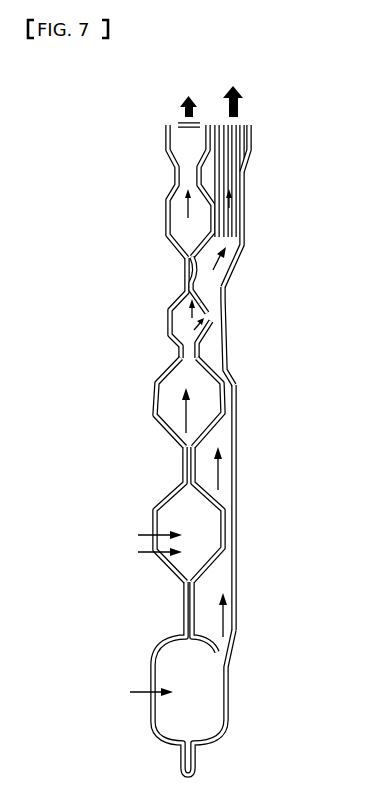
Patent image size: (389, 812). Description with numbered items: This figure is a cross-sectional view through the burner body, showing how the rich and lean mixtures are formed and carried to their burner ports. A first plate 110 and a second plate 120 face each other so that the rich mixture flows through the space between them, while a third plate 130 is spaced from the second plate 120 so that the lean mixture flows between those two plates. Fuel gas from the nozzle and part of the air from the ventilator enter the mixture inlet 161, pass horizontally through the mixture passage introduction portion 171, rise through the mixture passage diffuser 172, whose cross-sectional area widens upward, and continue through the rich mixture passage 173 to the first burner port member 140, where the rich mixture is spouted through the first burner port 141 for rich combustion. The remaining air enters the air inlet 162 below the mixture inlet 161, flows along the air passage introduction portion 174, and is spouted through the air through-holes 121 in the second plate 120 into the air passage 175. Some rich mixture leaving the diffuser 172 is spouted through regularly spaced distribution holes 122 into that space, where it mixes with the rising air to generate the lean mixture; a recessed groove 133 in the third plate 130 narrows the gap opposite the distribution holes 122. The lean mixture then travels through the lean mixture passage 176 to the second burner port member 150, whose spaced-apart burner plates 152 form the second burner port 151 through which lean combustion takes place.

The first plate 110 is at (190, 270).
The second plate 120 is at (238, 293).
The air through-hole 121 is at (220, 659).
The distribution hole 122 is at (210, 316).
The third plate 130 is at (233, 437).
The recessed groove 133 is at (229, 355).
The first burner port member 140 is at (165, 137).
The first burner port 141 is at (177, 124).
The second burner port member 150 is at (282, 172).
The second burner port 151 is at (241, 124).
The burner plate 152 is at (227, 138).
The mixture inlet 161 is at (207, 533).
The air inlet 162 is at (212, 708).
The mixture passage introduction portion 171 is at (217, 514).
The mixture passage diffuser 172 is at (208, 402).
The rich mixture passage 173 is at (151, 191).
The air passage introduction portion 174 is at (213, 678).
The air passage 175 is at (223, 472).
The lean mixture passage 176 is at (243, 249).